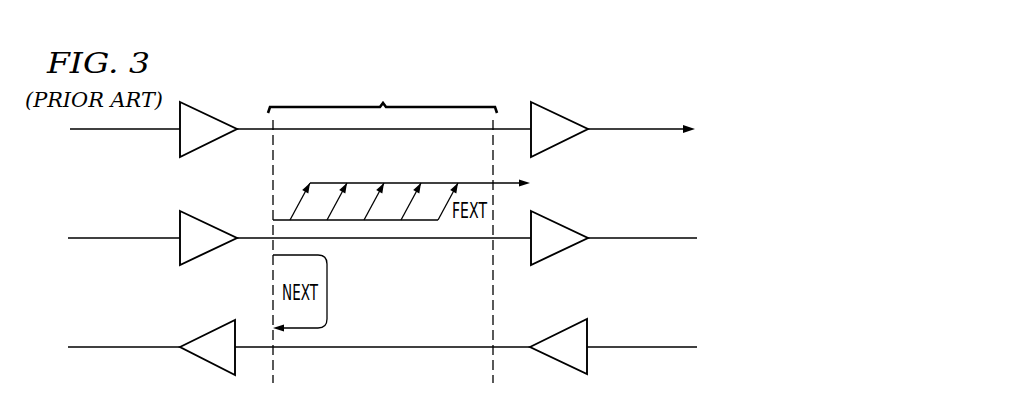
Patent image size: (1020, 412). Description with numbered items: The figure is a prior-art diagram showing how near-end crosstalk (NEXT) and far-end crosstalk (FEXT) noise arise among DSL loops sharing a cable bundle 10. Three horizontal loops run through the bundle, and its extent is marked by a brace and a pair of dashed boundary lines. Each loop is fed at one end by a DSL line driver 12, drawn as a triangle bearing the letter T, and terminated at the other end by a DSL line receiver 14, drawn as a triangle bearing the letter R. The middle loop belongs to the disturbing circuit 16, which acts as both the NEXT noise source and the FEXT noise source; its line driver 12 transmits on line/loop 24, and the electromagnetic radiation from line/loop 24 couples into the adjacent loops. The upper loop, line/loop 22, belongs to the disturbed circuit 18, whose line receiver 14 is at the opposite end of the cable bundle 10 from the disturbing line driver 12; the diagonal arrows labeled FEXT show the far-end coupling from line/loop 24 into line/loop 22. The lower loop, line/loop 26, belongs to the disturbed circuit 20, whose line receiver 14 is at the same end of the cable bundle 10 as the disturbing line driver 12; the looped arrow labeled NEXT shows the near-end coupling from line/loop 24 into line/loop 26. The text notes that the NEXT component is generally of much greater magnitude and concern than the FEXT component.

The cable bundle 10 is at (382, 94).
The DSL line driver 12 is at (207, 115).
The DSL line receiver 14 is at (558, 115).
The disturbing circuit 16 is at (125, 238).
The disturbed circuit 18 is at (643, 130).
The disturbed circuit 20 is at (125, 347).
The line/loop 22 is at (385, 130).
The line/loop 24 is at (385, 238).
The line/loop 26 is at (383, 347).